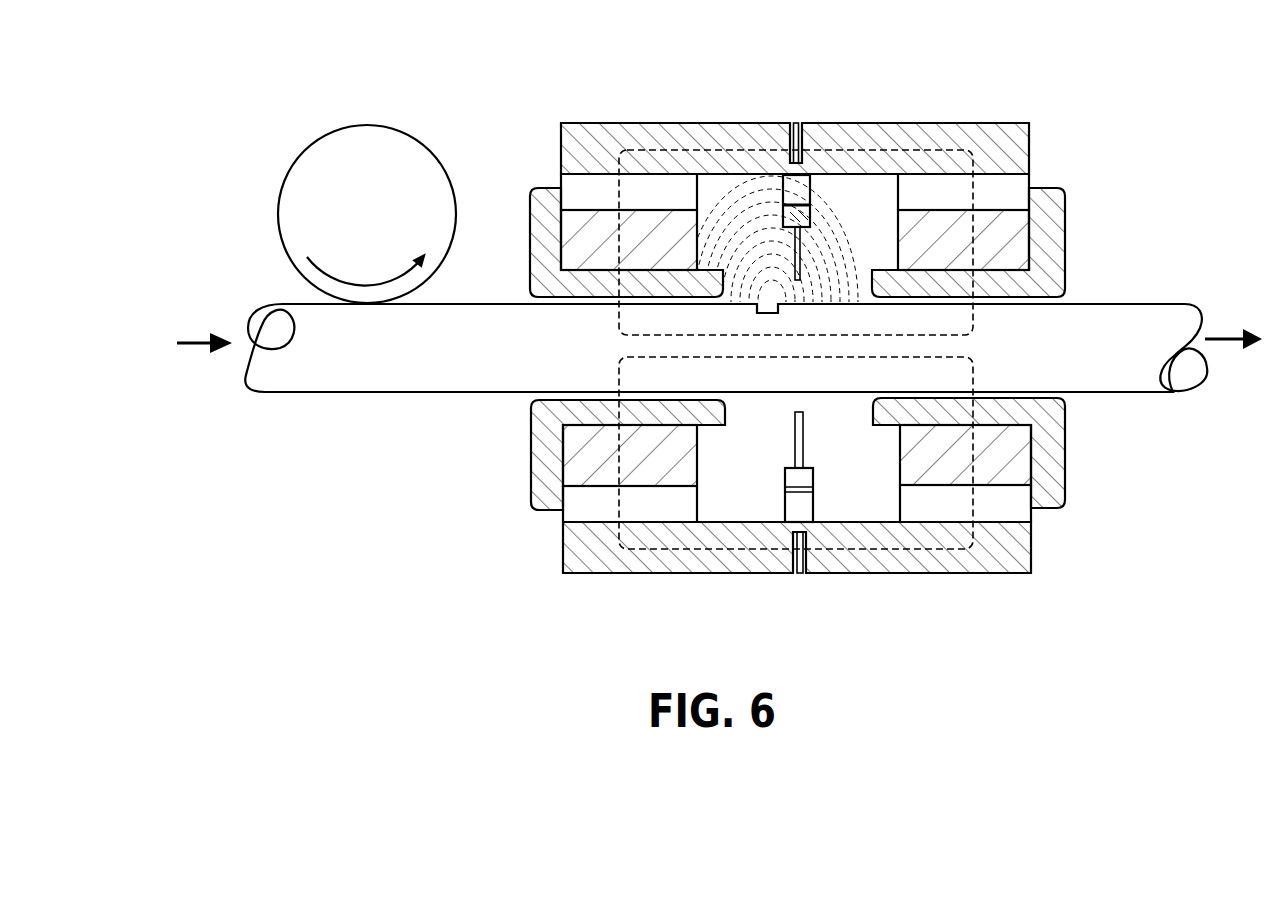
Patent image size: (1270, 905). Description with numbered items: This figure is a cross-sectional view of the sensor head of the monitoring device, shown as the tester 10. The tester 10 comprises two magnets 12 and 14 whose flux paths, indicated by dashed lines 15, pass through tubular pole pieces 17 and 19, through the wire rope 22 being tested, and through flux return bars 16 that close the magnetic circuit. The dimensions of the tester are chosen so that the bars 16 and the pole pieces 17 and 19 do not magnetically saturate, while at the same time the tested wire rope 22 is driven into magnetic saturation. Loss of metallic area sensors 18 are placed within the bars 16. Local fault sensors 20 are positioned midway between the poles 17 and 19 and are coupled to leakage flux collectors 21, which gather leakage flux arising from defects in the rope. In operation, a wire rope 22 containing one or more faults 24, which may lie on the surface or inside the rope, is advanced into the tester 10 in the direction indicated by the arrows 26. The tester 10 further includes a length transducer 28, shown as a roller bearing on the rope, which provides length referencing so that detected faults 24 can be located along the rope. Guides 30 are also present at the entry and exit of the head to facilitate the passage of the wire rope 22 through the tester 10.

The tester 10 is at (1118, 513).
The magnet 12 is at (1022, 192).
The magnet 14 is at (562, 177).
The flux paths 15 is at (620, 187).
The flux return bars 16 is at (1029, 137).
The tubular pole piece 17 is at (1020, 248).
The loss of metallic area sensors 18 is at (797, 122).
The tubular pole piece 19 is at (570, 237).
The local fault sensors 20 is at (813, 203).
The leakage flux collectors 21 is at (802, 254).
The wire rope 22 is at (453, 363).
The fault 24 is at (767, 305).
The arrows 26 is at (193, 348).
The length transducer 28 is at (318, 165).
The guides 30 is at (542, 282).